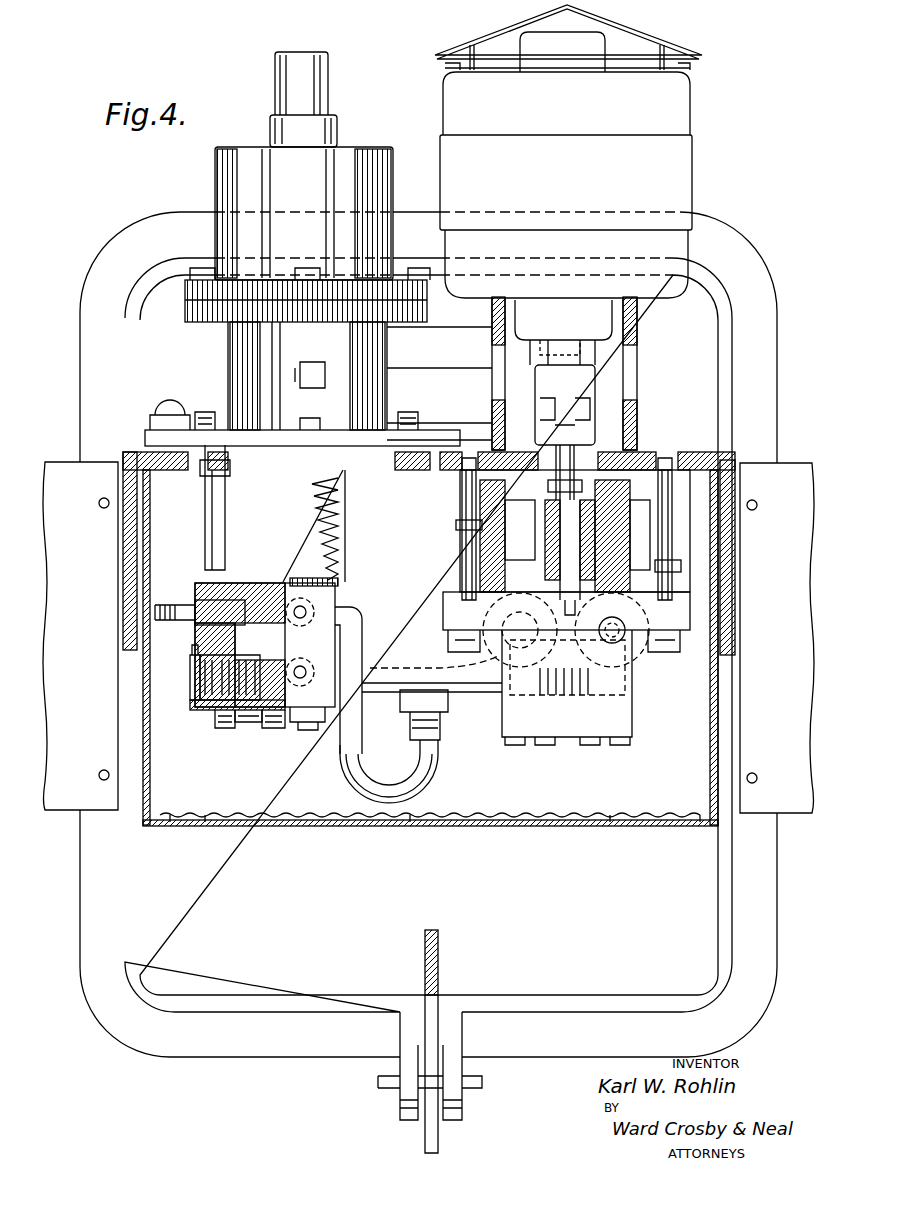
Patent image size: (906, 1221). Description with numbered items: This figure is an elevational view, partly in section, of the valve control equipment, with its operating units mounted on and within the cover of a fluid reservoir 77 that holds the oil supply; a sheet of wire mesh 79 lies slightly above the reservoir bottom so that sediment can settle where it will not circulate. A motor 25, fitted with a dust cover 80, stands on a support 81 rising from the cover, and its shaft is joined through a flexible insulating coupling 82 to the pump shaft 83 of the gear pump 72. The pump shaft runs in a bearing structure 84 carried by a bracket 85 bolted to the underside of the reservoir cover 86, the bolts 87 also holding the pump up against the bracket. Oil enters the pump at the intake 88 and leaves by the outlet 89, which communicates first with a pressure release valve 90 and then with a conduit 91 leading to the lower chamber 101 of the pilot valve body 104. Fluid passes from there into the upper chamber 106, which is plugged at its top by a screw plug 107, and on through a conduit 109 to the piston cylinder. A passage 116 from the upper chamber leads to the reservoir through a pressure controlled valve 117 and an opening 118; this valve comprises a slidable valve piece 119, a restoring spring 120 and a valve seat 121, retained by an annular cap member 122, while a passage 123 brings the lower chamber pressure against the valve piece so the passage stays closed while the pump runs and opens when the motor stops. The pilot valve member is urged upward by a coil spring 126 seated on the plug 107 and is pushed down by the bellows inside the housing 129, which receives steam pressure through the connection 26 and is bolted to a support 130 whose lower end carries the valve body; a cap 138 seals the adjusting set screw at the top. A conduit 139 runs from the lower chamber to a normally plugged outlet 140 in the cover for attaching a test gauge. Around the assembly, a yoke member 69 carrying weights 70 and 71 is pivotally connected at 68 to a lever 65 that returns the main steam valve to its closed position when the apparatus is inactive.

The motor 25 is at (690, 165).
The pressure connection 26 is at (330, 122).
The lever 65 is at (440, 972).
The pivotal connection 68 is at (470, 1090).
The yoke member 69 is at (722, 978).
The weight 70 is at (790, 812).
The weight 71 is at (70, 812).
The gear pump 72 is at (625, 690).
The fluid reservoir 77 is at (150, 777).
The wire mesh sheet 79 is at (270, 815).
The dust cover 80 is at (665, 55).
The support 81 is at (638, 412).
The flexible insulating coupling 82 is at (585, 382).
The pump shaft 83 is at (575, 465).
The bearing structure 84 is at (510, 525).
The bracket 85 is at (456, 524).
The reservoir cover 86 is at (462, 490).
The bolts 87 is at (475, 558).
The pump intake 88 is at (492, 688).
The pump outlet 89 is at (624, 640).
The pressure release valve 90 is at (640, 610).
The conduit 91 is at (418, 668).
The lower chamber 101 is at (310, 661).
The pilot valve body 104 is at (265, 682).
The upper chamber 106 is at (318, 600).
The screw plug 107 is at (338, 582).
The conduit 109 is at (432, 777).
The passage 116 is at (215, 637).
The pressure controlled valve 117 is at (200, 705).
The opening 118 is at (200, 668).
The valve piece 119 is at (270, 728).
The restoring spring 120 is at (245, 722).
The valve seat 121 is at (210, 715).
The annular cap member 122 is at (195, 690).
The passage 123 is at (278, 692).
The coil spring 126 is at (338, 510).
The housing 129 is at (360, 150).
The support 130 is at (232, 355).
The cap 138 is at (312, 54).
The conduit 139 is at (205, 540).
The plugged outlet 140 is at (195, 428).